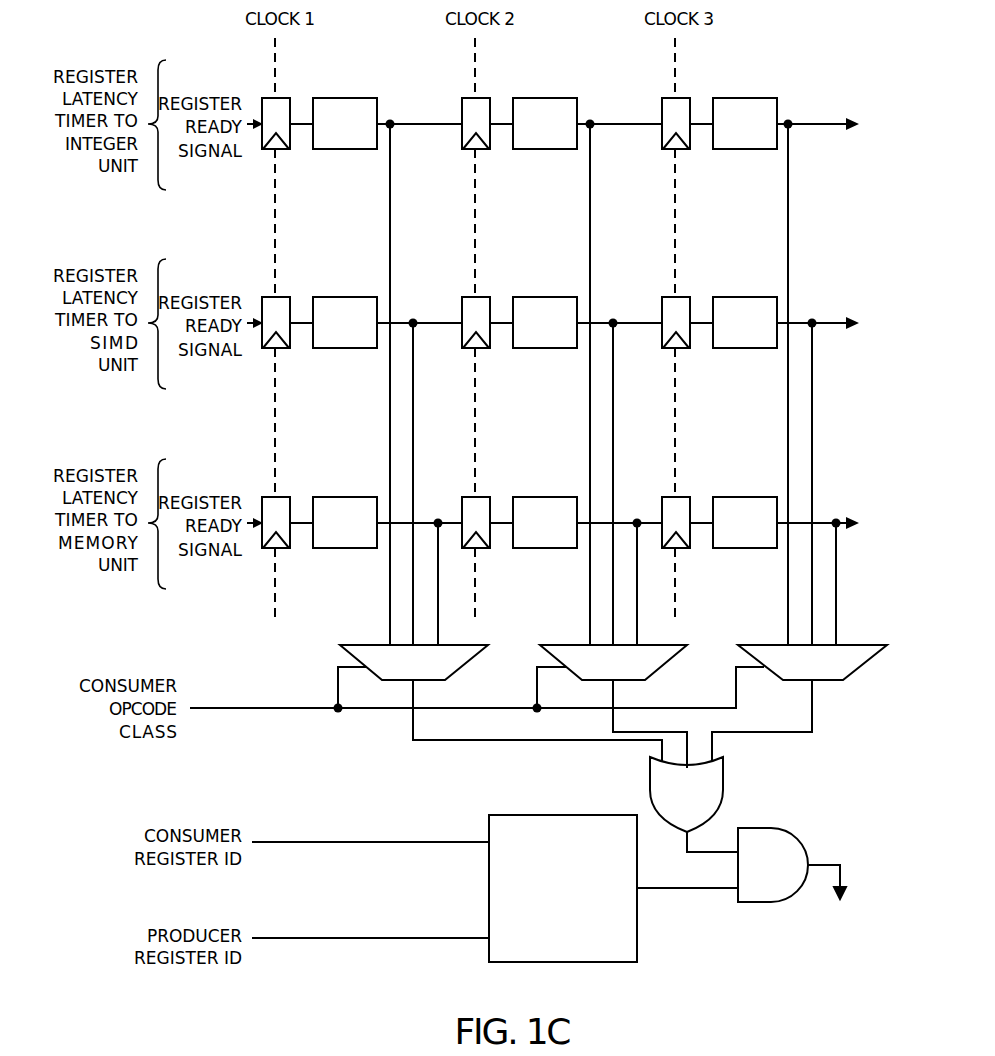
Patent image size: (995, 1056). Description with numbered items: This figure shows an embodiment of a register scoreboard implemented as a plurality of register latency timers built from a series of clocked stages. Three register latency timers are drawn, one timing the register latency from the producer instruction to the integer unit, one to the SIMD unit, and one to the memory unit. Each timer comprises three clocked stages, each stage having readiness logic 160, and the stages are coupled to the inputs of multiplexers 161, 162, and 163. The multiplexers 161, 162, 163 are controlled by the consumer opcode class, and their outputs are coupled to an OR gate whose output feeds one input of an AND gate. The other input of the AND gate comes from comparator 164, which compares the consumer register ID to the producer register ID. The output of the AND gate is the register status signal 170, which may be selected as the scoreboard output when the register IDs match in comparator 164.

The readiness logic 160 is at (759, 533).
The multiplexer 161 is at (462, 662).
The multiplexer 162 is at (667, 653).
The multiplexer 163 is at (843, 653).
The comparator 164 is at (549, 910).
The register status signal 170 is at (813, 920).